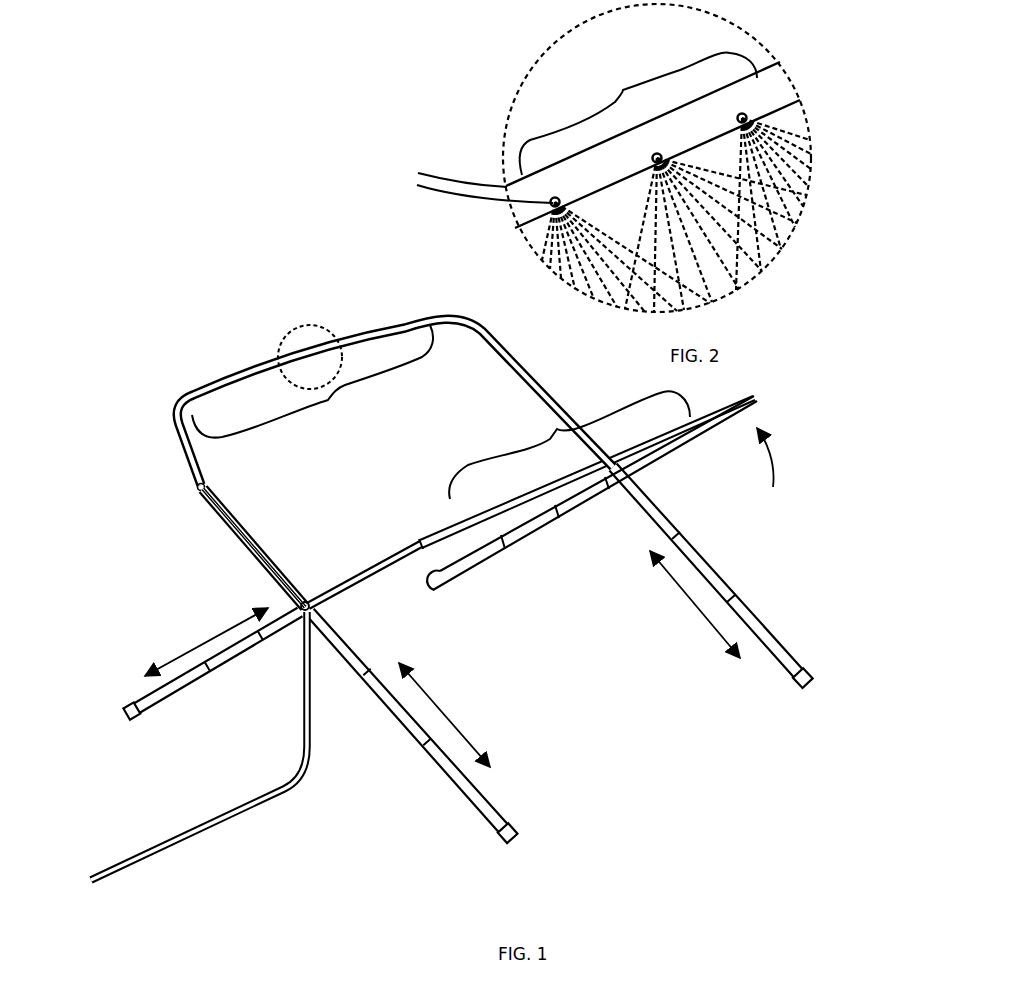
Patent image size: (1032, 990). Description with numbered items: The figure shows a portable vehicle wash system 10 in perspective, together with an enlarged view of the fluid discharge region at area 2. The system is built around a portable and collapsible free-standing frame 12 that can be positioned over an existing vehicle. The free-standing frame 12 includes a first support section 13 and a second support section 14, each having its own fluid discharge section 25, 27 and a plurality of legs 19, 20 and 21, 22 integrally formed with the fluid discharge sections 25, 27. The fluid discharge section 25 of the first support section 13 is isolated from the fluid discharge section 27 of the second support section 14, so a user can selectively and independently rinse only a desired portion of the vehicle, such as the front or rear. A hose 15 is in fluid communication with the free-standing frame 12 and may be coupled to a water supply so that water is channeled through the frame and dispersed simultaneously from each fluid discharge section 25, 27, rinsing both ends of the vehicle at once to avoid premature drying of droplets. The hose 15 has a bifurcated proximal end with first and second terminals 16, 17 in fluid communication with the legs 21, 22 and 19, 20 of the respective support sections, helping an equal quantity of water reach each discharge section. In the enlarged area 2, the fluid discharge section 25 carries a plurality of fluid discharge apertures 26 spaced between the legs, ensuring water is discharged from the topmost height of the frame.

In FIG. 1, the area 2 is at (297, 328).
In FIG. 1, the portable vehicle wash system 10 is at (358, 222).
In FIG. 1, the free-standing frame 12 is at (165, 500).
In FIG. 1, the first support section 13 is at (197, 376).
In FIG. 1, the second support section 14 is at (777, 472).
In FIG. 1, the hose 15 is at (197, 837).
In FIG. 1, the first terminal 16 is at (240, 543).
In FIG. 1, the second terminal 17 is at (373, 563).
In FIG. 1, the leg 19 is at (653, 450).
In FIG. 1, the leg 20 is at (282, 625).
In FIG. 1, the leg 21 is at (657, 518).
In FIG. 1, the leg 22 is at (343, 638).
In FIG. 1, the fluid discharge section 25 is at (312, 381).
In FIG. 2, the fluid discharge section 25 is at (638, 114).
In FIG. 1, the fluid discharge apertures 26 is at (469, 185).
In FIG. 2, the fluid discharge apertures 26 is at (782, 70).
In FIG. 1, the fluid discharge section 27 is at (569, 445).